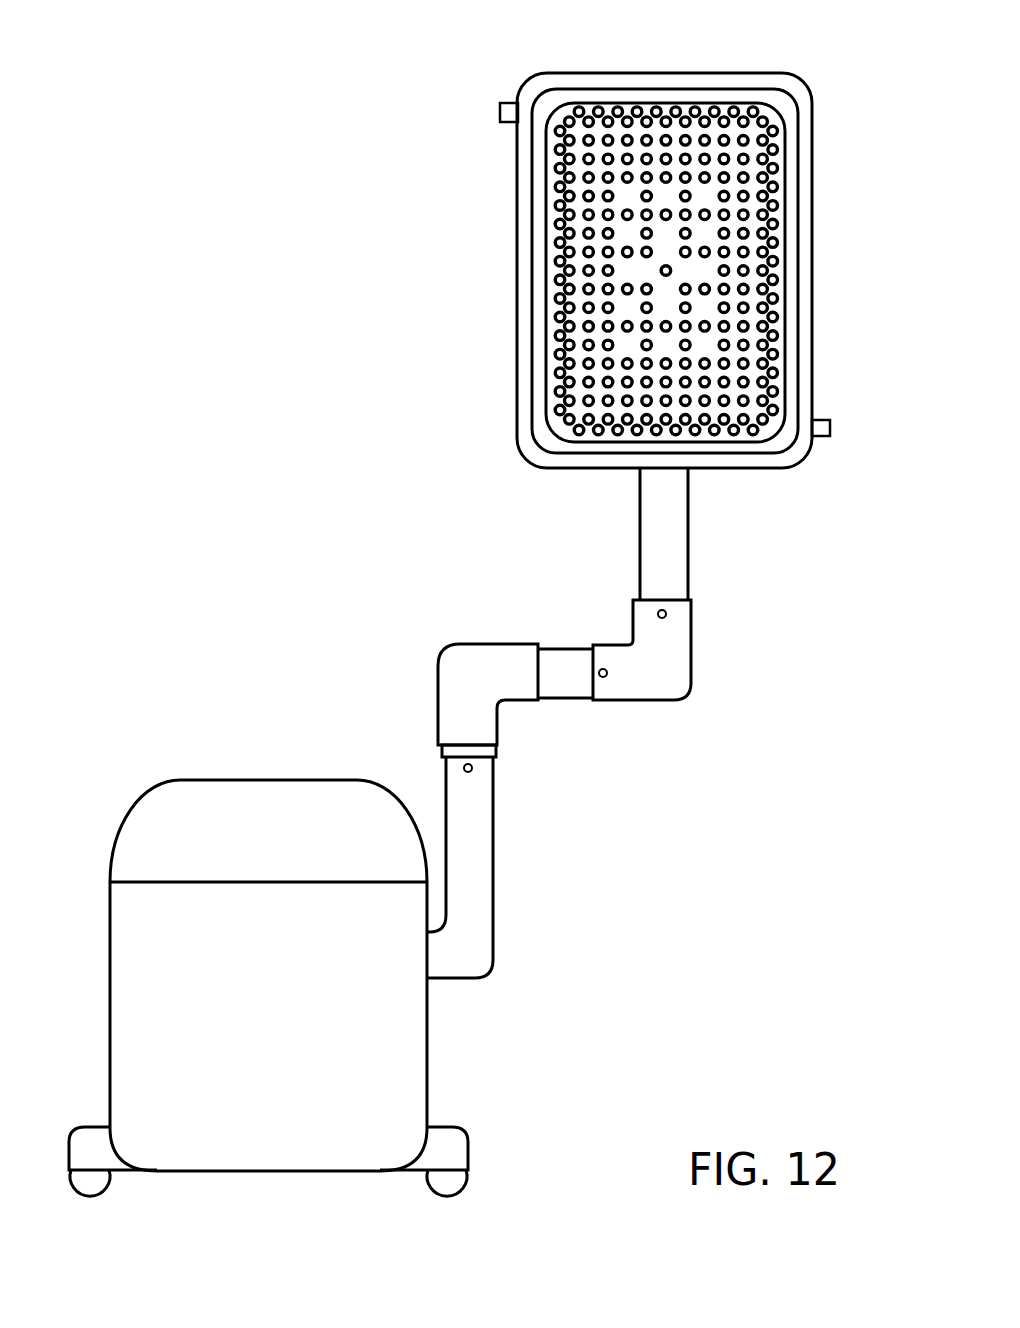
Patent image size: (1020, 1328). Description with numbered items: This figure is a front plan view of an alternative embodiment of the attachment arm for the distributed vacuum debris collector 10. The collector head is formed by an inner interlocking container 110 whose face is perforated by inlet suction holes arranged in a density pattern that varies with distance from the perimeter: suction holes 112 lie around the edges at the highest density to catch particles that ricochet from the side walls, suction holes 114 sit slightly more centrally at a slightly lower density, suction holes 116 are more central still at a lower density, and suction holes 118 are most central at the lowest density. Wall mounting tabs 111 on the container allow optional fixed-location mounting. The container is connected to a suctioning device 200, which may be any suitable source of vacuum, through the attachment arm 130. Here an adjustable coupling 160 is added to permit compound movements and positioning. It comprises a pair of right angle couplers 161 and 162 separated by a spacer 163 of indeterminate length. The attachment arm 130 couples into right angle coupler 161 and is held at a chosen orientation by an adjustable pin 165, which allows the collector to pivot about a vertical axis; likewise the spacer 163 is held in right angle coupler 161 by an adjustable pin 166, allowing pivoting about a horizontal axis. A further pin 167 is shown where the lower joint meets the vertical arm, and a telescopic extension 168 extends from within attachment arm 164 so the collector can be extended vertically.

The distributed vacuum debris collector 10 is at (663, 238).
The inner interlocking container 110 is at (806, 353).
The wall mounting tabs 111 is at (500, 108).
The suction holes 112 is at (777, 150).
The suction holes 114 is at (746, 212).
The suction holes 116 is at (689, 251).
The suction holes 118 is at (670, 272).
The attachment arm 130 is at (676, 553).
The adjustable coupling 160 is at (558, 674).
The right angle coupler 161 is at (682, 653).
The right angle coupler 162 is at (450, 675).
The spacer 163 is at (565, 660).
The attachment arm 164 is at (488, 833).
The adjustable pin 165 is at (666, 613).
The adjustable pin 166 is at (603, 678).
The locking pin 167 is at (472, 768).
The telescopic extension 168 is at (450, 748).
The suctioning device 200 is at (292, 950).